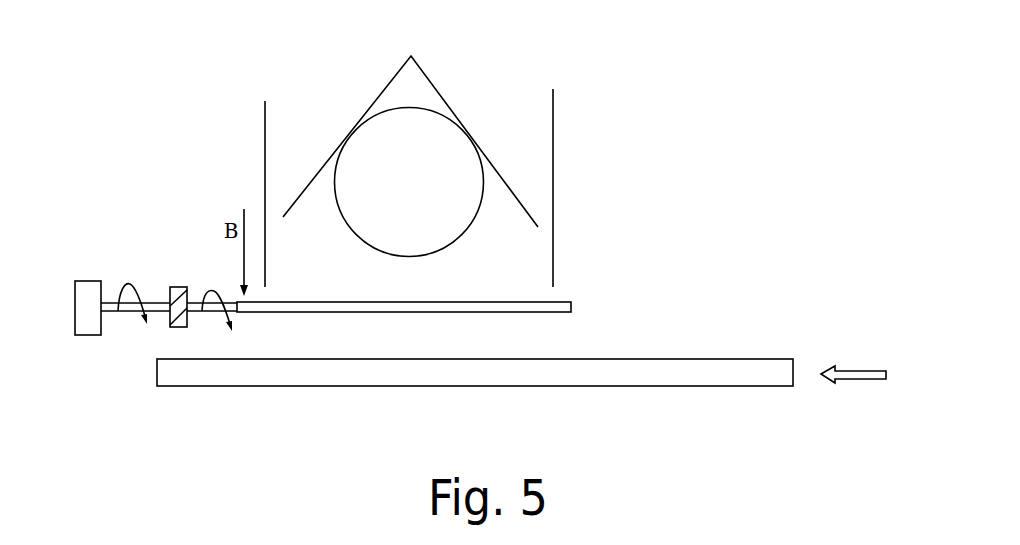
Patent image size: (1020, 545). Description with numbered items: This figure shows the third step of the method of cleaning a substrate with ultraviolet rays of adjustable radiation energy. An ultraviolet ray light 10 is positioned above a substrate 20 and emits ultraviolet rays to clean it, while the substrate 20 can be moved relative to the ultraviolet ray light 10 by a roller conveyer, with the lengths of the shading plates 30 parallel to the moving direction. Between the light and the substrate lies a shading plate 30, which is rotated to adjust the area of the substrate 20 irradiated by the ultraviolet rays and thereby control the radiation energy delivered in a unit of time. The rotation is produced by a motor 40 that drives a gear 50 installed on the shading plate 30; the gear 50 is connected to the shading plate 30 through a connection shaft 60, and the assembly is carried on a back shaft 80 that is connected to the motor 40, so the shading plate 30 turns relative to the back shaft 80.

The ultraviolet ray light 10 is at (440, 162).
The substrate 20 is at (683, 373).
The shading plate 30 is at (533, 307).
The motor 40 is at (82, 297).
The gear 50 is at (178, 292).
The connection shaft 60 is at (217, 303).
The back shaft 80 is at (131, 304).